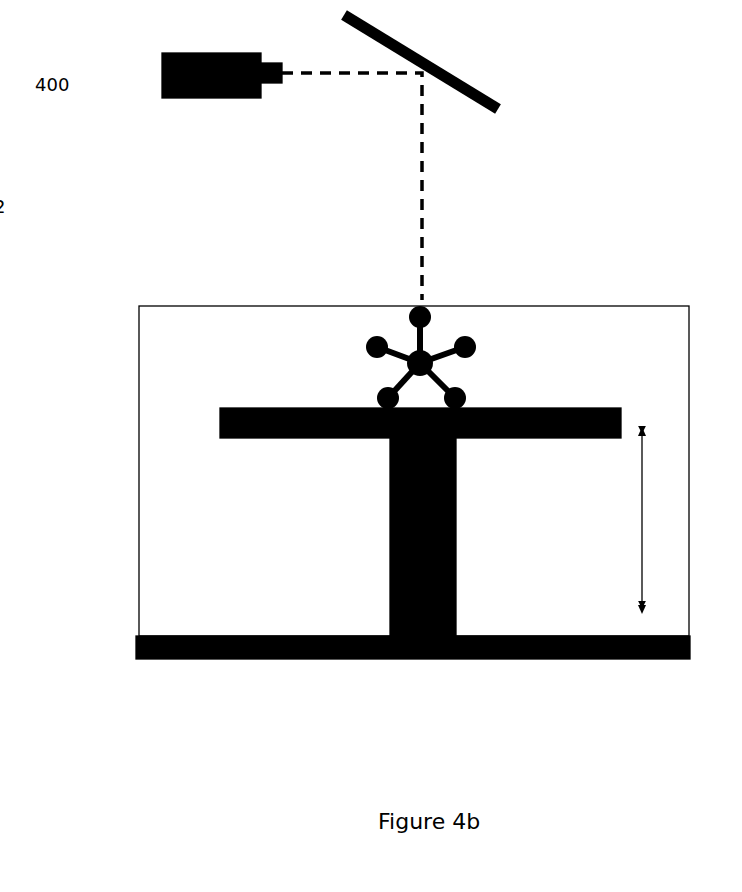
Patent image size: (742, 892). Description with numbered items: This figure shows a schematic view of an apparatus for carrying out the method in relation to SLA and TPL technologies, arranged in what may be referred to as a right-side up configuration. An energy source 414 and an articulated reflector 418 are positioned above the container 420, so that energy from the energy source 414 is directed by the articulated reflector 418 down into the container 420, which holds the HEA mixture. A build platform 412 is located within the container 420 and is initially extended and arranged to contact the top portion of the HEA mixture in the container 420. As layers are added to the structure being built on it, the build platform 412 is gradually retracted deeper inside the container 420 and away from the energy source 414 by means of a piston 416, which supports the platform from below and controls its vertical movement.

The build platform 412 is at (532, 408).
The energy source 414 is at (484, 77).
The piston 416 is at (388, 518).
The articulated reflector 418 is at (225, 100).
The container 420 is at (471, 302).